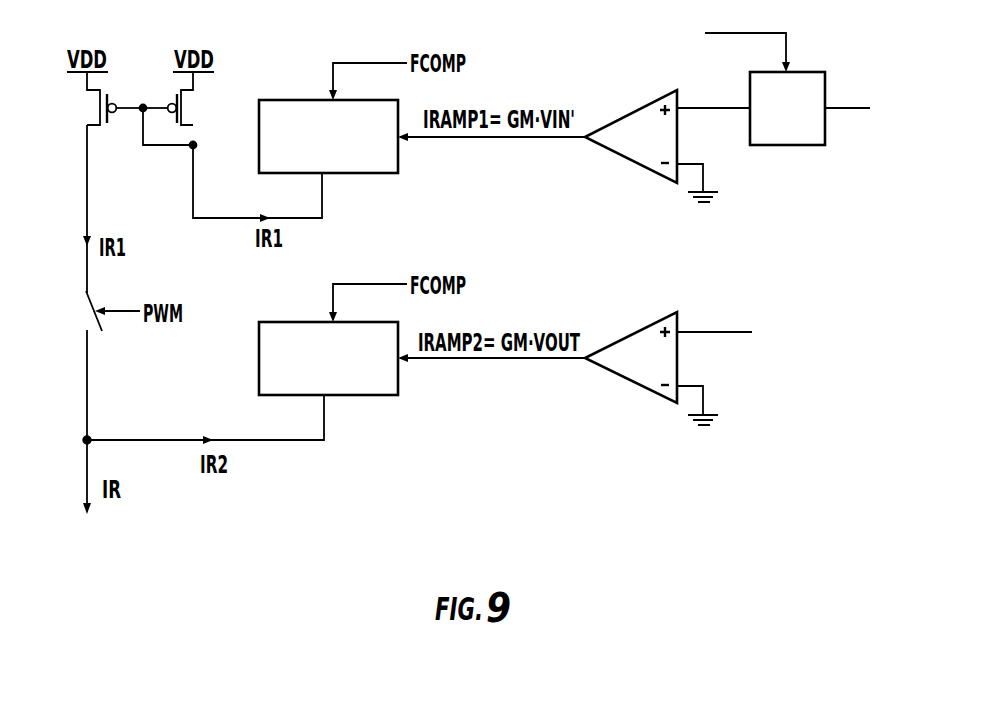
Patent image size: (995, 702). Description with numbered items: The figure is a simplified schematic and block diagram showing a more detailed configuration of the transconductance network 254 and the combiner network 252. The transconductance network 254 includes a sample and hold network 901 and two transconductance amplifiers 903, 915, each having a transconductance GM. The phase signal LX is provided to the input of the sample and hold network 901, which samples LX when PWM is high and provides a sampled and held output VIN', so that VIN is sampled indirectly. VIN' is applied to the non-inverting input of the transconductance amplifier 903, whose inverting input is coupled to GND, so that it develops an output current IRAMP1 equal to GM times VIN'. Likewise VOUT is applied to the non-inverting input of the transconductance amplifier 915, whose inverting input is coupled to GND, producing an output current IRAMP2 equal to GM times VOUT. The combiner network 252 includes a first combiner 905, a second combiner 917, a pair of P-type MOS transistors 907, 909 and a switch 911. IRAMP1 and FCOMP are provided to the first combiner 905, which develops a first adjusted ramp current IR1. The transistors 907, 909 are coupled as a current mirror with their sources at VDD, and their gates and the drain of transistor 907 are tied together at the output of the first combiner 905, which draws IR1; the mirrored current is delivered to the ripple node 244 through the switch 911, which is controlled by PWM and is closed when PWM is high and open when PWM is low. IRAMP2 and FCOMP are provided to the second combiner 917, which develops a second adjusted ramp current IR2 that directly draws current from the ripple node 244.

The sample and hold (SH) network 901 is at (792, 146).
The transconductance amplifier 903 is at (633, 163).
The first combiner 905 is at (368, 174).
The P-type MOS transistor 907 is at (182, 108).
The P-type MOS transistor 909 is at (100, 109).
The switch 911 is at (97, 312).
The transconductance amplifier 915 is at (641, 387).
The second combiner 917 is at (370, 396).
The ripple node 244 is at (88, 439).
The combiner network 252 is at (629, 387).
The transconductance network 254 is at (726, 147).